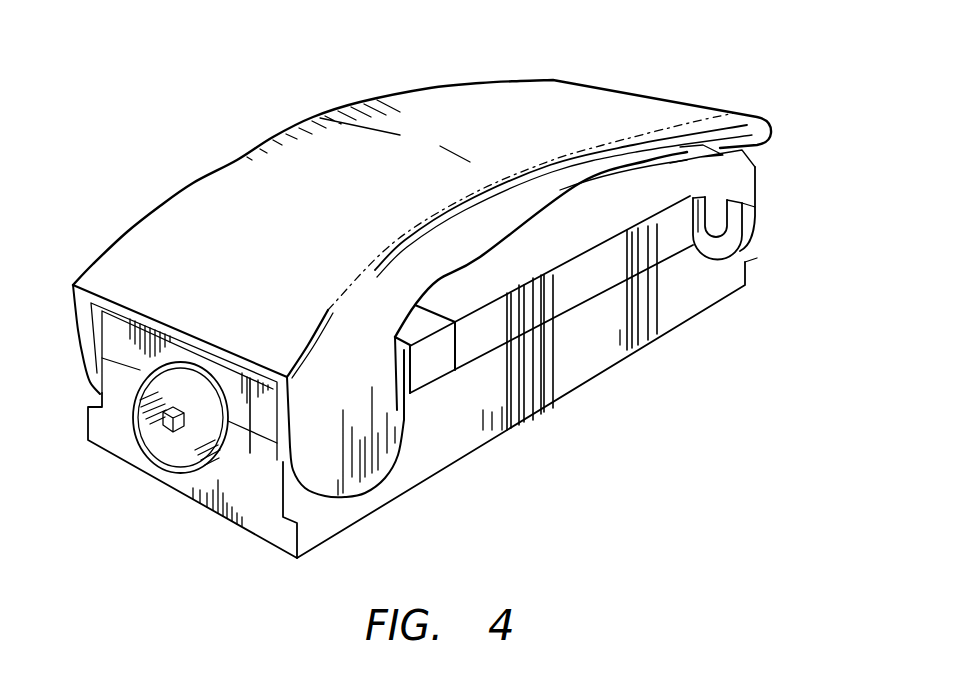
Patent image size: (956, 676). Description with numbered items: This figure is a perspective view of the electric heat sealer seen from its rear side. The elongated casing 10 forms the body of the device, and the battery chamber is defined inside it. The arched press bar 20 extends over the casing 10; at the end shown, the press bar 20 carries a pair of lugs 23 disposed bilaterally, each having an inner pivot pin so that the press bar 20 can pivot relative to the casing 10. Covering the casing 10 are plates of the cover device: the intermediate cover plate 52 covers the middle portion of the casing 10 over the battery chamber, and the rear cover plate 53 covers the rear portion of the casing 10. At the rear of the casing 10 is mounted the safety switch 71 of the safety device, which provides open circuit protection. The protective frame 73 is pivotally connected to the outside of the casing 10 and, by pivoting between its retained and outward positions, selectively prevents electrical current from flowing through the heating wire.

The casing 10 is at (503, 462).
The press bar 20 is at (452, 104).
The lugs 23 is at (372, 477).
The intermediate cover plate 52 is at (560, 310).
The rear cover plate 53 is at (267, 415).
The safety switch 71 is at (160, 443).
The protective frame 73 is at (737, 207).